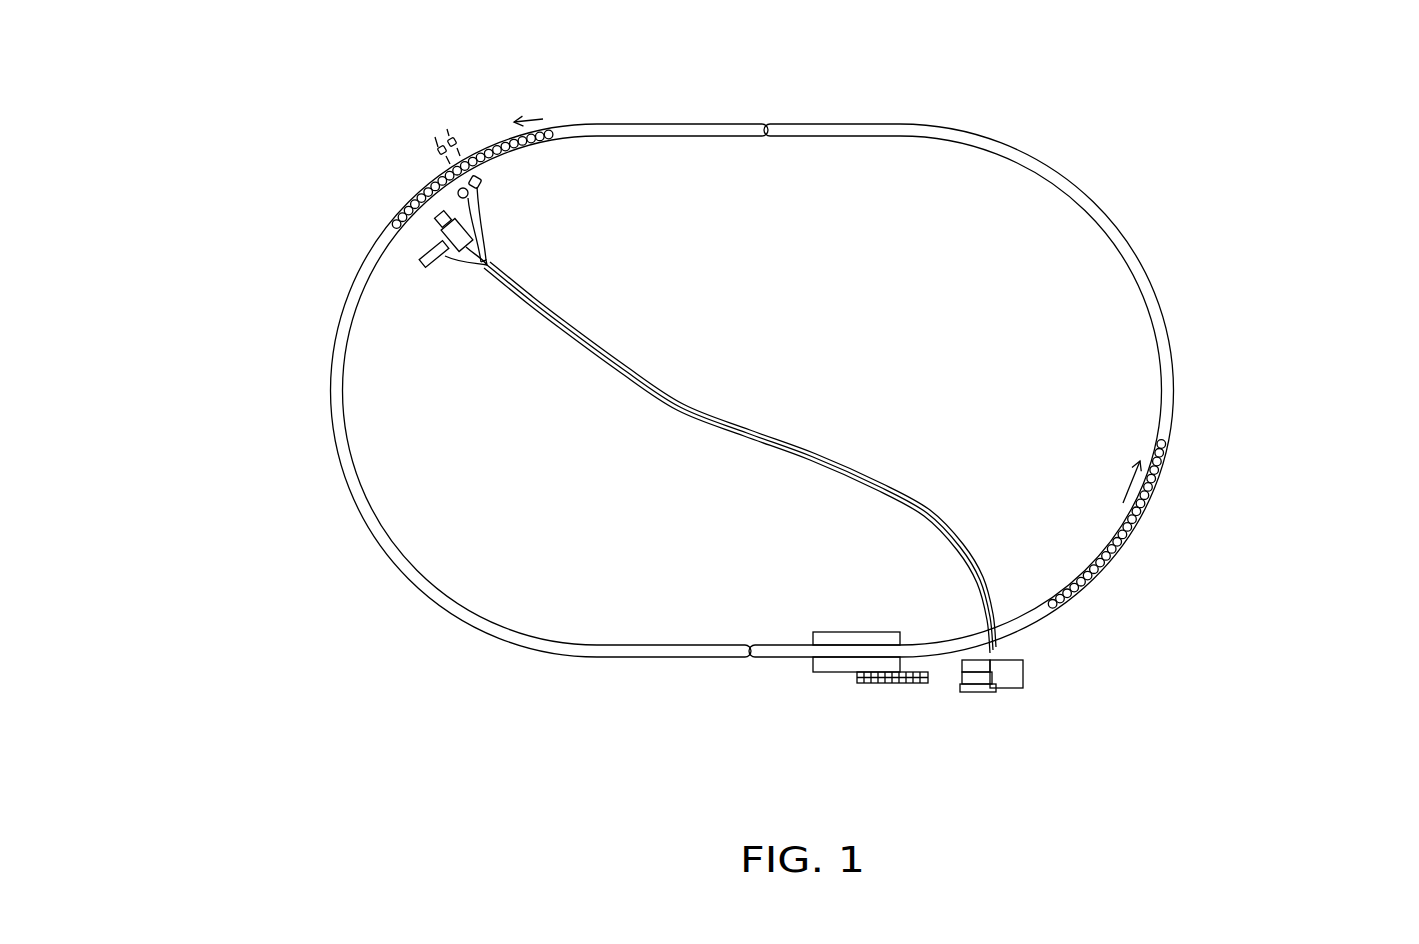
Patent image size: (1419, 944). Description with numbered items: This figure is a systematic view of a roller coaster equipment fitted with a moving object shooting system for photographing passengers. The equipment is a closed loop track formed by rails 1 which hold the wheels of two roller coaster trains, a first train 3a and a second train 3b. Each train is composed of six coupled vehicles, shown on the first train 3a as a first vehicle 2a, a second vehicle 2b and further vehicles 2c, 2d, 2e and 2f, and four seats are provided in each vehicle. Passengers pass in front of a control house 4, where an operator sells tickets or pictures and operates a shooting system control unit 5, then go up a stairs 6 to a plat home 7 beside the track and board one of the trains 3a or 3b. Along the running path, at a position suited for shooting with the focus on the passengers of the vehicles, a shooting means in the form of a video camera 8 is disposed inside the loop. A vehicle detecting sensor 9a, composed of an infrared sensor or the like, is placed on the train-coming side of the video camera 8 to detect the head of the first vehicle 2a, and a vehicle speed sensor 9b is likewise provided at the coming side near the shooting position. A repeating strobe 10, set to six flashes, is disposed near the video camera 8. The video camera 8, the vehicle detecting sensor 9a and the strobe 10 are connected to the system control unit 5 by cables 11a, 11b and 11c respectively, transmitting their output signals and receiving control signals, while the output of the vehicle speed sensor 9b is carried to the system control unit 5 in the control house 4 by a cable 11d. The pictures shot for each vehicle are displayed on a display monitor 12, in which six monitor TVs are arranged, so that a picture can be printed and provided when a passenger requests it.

The rail 1 is at (1106, 231).
The first vehicle 2a is at (387, 226).
The second vehicle 2b is at (420, 190).
The vehicle 2c is at (446, 171).
The vehicle 2d is at (483, 150).
The vehicle 2e is at (508, 139).
The vehicle 2f is at (552, 126).
The first train 3a is at (349, 164).
The second train 3b is at (1130, 560).
The control house 4 is at (1020, 674).
The system control unit 5 is at (962, 688).
The stairs 6 is at (866, 685).
The plat home 7 is at (813, 668).
The video camera 8 is at (440, 237).
The vehicle detecting sensor 9a is at (487, 182).
The vehicle speed sensor 9b is at (489, 206).
The repeating strobe 10 is at (423, 272).
The cable 11a is at (600, 349).
The cable 11b is at (624, 367).
The cable 11c is at (682, 406).
The cable 11d is at (490, 228).
The display monitor 12 is at (987, 690).